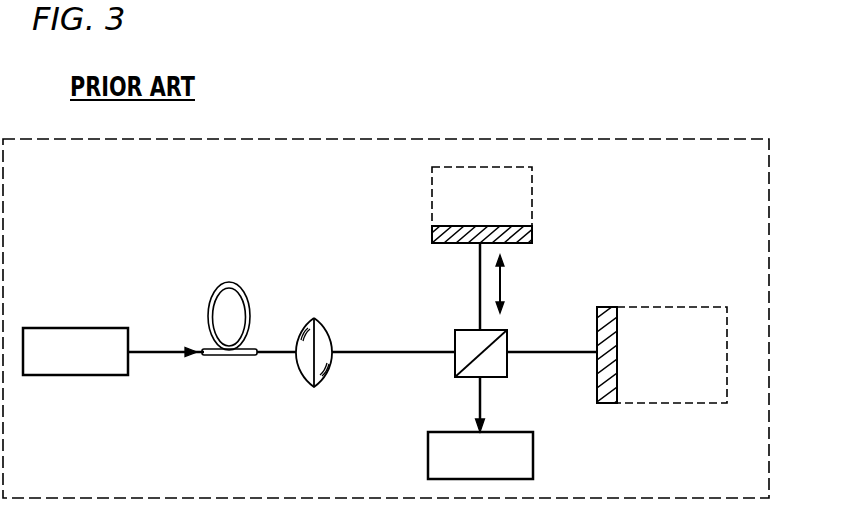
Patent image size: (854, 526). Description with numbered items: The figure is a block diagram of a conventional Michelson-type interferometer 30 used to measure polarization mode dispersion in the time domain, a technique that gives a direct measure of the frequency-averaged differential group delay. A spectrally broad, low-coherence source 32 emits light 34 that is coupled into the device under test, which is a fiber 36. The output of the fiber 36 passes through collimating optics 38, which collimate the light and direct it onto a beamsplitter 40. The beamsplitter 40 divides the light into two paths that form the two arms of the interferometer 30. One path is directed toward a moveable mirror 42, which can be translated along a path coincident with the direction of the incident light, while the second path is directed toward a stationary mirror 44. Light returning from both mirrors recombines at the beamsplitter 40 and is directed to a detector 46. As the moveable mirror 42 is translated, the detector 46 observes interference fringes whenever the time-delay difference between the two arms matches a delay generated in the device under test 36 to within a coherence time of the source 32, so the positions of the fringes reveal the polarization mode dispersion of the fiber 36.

The interferometer 30 is at (120, 174).
The source 32 is at (75, 328).
The light 34 is at (156, 351).
The device under test (fiber) 36 is at (229, 283).
The collimating optics 38 is at (313, 318).
The beamsplitter 40 is at (455, 333).
The moveable mirror 42 is at (432, 228).
The stationary mirror 44 is at (612, 307).
The detector 46 is at (535, 456).